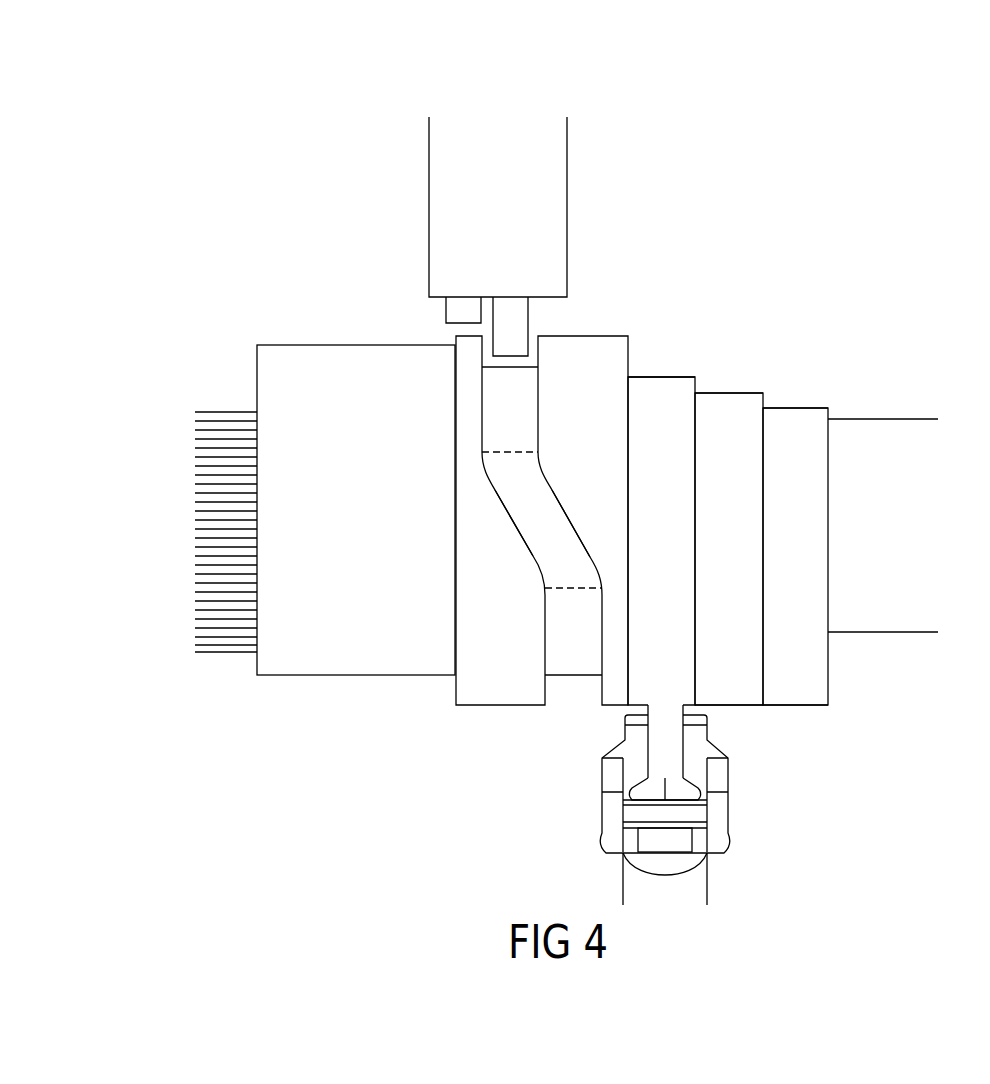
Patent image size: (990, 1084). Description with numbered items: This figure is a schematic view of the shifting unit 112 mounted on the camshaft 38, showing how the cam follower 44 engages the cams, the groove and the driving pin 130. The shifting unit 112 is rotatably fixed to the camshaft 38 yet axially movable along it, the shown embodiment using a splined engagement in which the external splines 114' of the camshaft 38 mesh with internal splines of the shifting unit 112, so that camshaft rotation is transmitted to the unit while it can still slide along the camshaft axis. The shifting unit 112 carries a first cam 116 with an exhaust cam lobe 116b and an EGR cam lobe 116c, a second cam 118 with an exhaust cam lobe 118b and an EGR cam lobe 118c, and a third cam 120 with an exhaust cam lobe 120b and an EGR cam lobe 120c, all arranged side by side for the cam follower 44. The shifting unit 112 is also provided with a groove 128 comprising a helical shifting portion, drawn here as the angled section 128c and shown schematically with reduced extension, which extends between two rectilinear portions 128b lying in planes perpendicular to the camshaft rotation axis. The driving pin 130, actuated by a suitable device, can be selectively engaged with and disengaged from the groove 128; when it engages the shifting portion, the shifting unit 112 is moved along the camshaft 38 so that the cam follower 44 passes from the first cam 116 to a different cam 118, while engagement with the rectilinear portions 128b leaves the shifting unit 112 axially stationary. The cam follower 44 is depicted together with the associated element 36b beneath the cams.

The cable 36b is at (732, 881).
The camshaft 38 is at (890, 418).
The cam follower 44 is at (720, 777).
The shifting unit 112 is at (312, 657).
The external splines 114' is at (212, 509).
The first cam 116 is at (810, 566).
The exhaust cam lobe 116b is at (797, 706).
The EGR cam lobe 116c is at (795, 407).
The second cam 118 is at (745, 559).
The exhaust cam lobe 118b is at (732, 707).
The EGR cam lobe 118c is at (730, 392).
The third cam 120 is at (677, 554).
The exhaust cam lobe 120b is at (646, 733).
The EGR cam lobe 120c is at (662, 375).
The groove 128 is at (520, 519).
The rectilinear portions 128b is at (508, 385).
The angled portion of slot 128c is at (543, 522).
The driving pin 130 is at (452, 312).